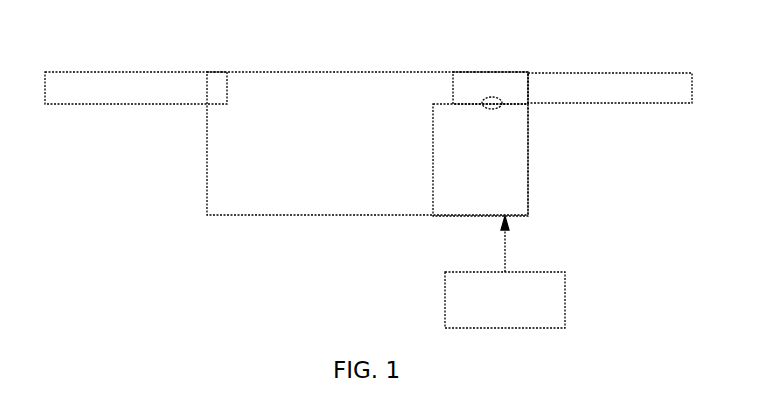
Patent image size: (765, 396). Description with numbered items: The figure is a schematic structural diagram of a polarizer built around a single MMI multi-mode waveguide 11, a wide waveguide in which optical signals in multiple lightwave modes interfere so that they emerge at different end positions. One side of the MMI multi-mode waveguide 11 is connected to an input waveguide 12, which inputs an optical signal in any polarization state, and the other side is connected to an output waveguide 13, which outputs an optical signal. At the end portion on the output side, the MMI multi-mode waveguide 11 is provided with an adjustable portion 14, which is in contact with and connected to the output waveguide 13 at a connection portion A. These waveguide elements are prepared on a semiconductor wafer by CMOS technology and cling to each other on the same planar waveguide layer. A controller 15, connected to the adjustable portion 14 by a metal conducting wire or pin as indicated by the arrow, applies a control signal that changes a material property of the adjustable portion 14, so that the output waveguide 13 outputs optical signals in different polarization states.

The MMI multi-mode waveguide 11 is at (313, 87).
The input waveguide 12 is at (167, 72).
The output waveguide 13 is at (612, 73).
The adjustable portion 14 is at (530, 185).
The controller 15 is at (565, 297).
The connection portion A is at (497, 100).